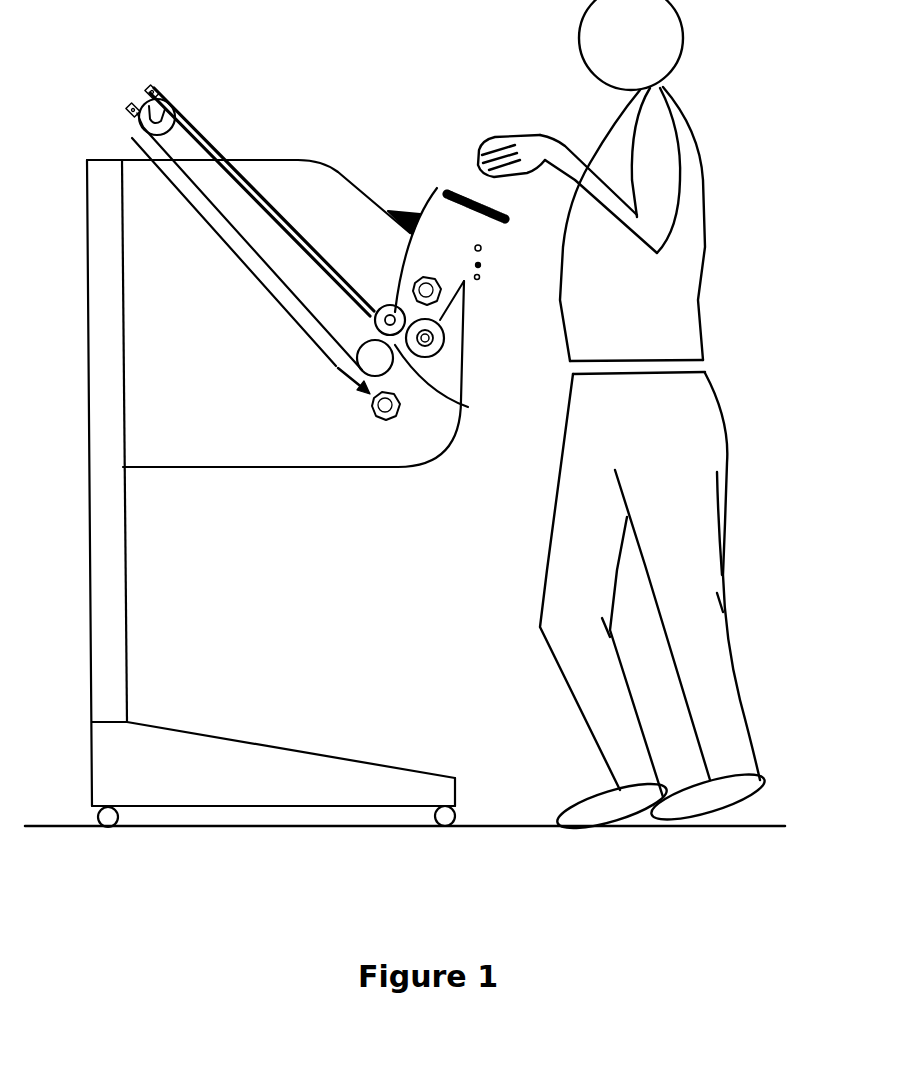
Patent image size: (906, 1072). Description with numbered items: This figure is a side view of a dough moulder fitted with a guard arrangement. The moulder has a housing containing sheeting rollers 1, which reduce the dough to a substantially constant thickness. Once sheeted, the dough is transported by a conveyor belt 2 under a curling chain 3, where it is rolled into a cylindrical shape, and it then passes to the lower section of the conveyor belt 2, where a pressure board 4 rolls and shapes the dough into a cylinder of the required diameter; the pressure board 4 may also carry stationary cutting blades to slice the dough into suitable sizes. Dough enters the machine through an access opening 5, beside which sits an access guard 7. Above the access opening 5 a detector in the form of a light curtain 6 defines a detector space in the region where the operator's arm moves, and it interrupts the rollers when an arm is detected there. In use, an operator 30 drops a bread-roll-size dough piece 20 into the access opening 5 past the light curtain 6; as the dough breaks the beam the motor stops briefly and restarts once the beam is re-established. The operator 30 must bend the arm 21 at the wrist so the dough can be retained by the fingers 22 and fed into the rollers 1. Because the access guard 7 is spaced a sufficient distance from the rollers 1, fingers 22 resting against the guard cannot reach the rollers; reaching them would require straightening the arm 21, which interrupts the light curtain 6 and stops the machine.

The sheeting rollers 1 is at (433, 352).
The conveyor belt 2 is at (201, 146).
The curling chain 3 is at (253, 177).
The pressure board 4 is at (140, 150).
The access opening 5 is at (443, 270).
The light curtain 6 is at (452, 185).
The access guard 7 is at (482, 250).
The dough piece 20 is at (420, 283).
The arm 21 is at (578, 156).
The fingers 22 is at (517, 135).
The operator 30 is at (698, 322).